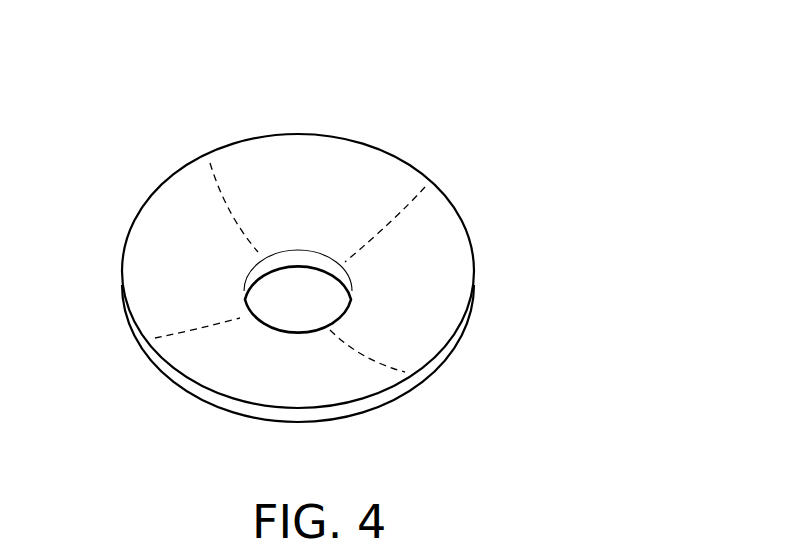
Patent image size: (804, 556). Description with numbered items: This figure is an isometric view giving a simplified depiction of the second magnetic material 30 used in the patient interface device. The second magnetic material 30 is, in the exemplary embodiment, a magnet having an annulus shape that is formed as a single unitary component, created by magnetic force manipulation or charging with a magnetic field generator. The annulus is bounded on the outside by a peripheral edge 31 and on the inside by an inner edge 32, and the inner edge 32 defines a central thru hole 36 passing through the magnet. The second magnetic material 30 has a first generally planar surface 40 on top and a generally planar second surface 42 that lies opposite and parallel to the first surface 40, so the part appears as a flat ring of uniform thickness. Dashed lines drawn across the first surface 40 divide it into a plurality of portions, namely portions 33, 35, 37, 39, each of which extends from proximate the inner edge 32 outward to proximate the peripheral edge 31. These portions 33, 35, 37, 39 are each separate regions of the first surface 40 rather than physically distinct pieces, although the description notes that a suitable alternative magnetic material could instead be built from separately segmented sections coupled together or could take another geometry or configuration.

The second magnetic material 30 is at (493, 96).
The peripheral edge 31 is at (412, 163).
The inner edge 32 is at (339, 263).
The portion 33 is at (340, 168).
The portion 35 is at (282, 373).
The thru hole 36 is at (305, 300).
The portion 37 is at (142, 268).
The portion 39 is at (445, 302).
The first generally planar surface 40 is at (195, 183).
The generally planar second surface 42 is at (196, 416).